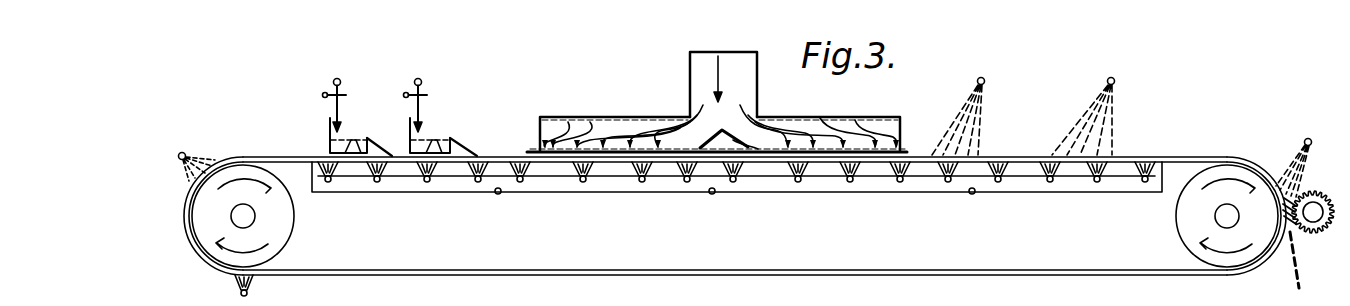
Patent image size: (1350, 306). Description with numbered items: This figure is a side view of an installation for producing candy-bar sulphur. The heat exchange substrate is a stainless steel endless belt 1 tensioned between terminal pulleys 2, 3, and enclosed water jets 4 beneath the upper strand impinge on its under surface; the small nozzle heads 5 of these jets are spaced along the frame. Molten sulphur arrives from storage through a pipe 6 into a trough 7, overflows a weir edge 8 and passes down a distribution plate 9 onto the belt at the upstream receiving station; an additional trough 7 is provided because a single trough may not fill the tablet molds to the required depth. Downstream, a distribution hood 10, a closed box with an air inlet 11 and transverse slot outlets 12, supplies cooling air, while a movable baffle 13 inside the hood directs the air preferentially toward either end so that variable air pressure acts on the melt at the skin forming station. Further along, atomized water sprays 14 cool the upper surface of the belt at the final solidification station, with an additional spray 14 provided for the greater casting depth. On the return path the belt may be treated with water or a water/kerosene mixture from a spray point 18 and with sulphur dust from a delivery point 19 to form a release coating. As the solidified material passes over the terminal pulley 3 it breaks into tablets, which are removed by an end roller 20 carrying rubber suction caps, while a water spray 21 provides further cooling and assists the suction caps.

The endless belt 1 is at (505, 270).
The terminal pulley 2 is at (290, 222).
The terminal pulley 3 is at (1183, 222).
The water jets 4 is at (450, 193).
The suction nozzles 5 is at (736, 172).
The pipe 6 is at (345, 95).
The trough 7 is at (329, 147).
The weir edge 8 is at (356, 140).
The distribution plate 9 is at (377, 144).
The distribution hood 10 is at (636, 117).
The air inlet 11 is at (750, 52).
The outlets 12 is at (580, 117).
The movable baffle 13 is at (752, 118).
The atomized water spray 14 is at (995, 86).
The spray point 18 is at (258, 290).
The delivery point 19 is at (183, 152).
The end roller 20 is at (1320, 190).
The water spray 21 is at (1308, 138).